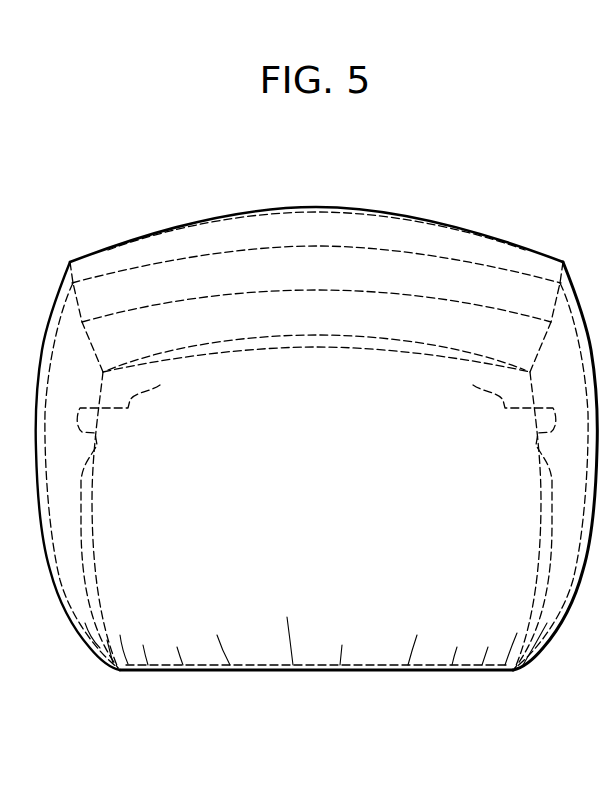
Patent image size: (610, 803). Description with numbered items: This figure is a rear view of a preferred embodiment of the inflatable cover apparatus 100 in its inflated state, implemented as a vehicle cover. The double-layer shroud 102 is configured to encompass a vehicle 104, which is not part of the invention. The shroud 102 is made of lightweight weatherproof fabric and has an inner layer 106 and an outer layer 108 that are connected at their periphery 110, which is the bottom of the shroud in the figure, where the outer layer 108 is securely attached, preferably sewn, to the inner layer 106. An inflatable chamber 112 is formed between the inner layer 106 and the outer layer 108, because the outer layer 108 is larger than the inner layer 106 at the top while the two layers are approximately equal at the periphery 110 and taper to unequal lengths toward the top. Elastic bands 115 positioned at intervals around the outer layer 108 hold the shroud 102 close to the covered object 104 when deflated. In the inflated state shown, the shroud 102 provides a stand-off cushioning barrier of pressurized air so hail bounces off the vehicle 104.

The inflatable cover apparatus 100 is at (98, 170).
The double-layer shroud 102 is at (218, 215).
The vehicle 104 is at (163, 395).
The inner layer 106 is at (428, 346).
The outer layer 108 is at (415, 213).
The periphery 110 is at (205, 673).
The inflatable chamber 112 is at (341, 323).
The elastic bands 115 is at (317, 212).